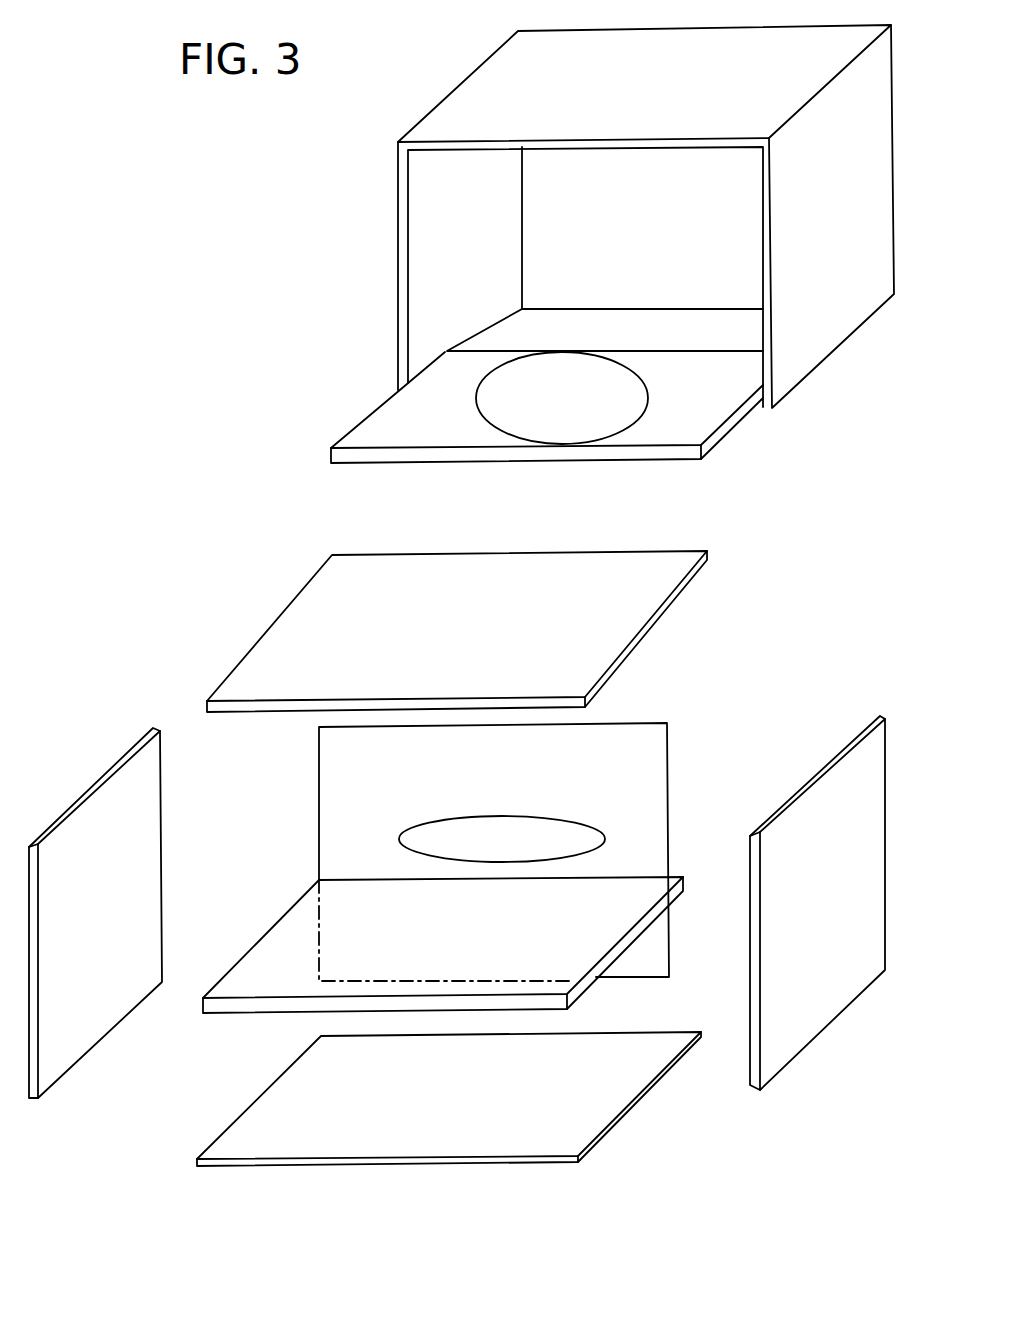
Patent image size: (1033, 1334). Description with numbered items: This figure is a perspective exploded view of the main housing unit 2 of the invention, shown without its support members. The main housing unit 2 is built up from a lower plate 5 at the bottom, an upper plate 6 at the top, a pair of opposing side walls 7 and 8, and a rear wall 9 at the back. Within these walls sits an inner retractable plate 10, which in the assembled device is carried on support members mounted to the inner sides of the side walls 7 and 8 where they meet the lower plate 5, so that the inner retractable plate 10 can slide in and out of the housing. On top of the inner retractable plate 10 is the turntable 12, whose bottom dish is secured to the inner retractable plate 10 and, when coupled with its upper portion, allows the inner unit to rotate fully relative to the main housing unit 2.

The main housing unit 2 is at (424, 306).
The lower plate 5 is at (559, 1128).
The upper plate 6 is at (558, 676).
The side wall 7 is at (130, 782).
The side wall 8 is at (850, 770).
The rear wall 9 is at (350, 817).
The inner retractable plate 10 is at (266, 983).
The turntable 12 is at (572, 838).